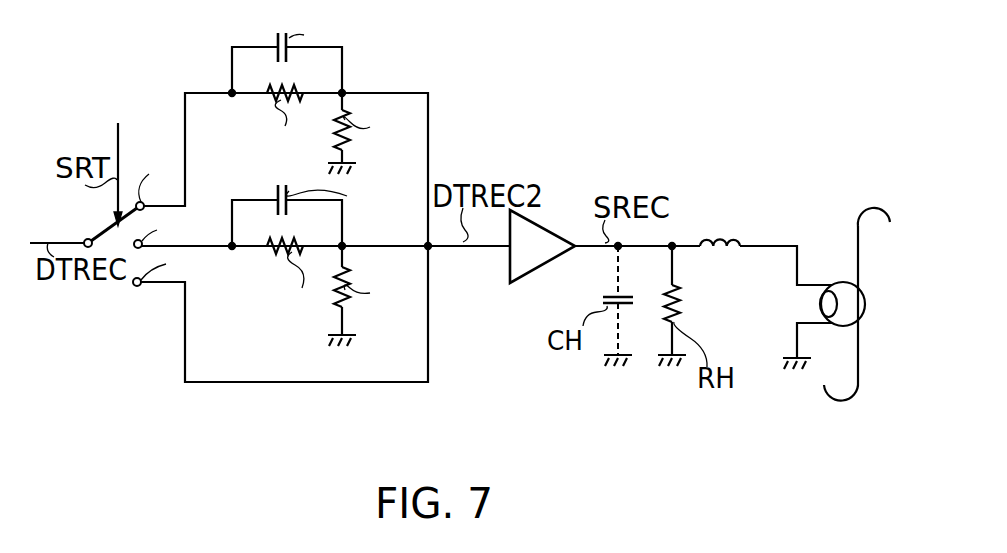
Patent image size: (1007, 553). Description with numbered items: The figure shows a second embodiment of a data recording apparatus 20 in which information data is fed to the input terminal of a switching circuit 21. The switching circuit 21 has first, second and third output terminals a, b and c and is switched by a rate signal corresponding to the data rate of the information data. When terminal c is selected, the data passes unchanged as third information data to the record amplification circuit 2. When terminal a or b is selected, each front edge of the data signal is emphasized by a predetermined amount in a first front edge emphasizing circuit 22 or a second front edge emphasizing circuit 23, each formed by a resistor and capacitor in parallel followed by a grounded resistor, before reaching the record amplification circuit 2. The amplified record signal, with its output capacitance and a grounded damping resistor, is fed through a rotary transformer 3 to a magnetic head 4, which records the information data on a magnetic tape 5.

The record amplification circuit 2 is at (553, 235).
The rotary transformer 3 is at (723, 238).
The magnetic head 4 is at (822, 304).
The magnetic tape 5 is at (858, 256).
The data recording apparatus 20 is at (527, 78).
The switching circuit 21 is at (104, 288).
The first front edge emphasizing circuit 22 is at (256, 135).
The second front edge emphasizing circuit 23 is at (269, 278).